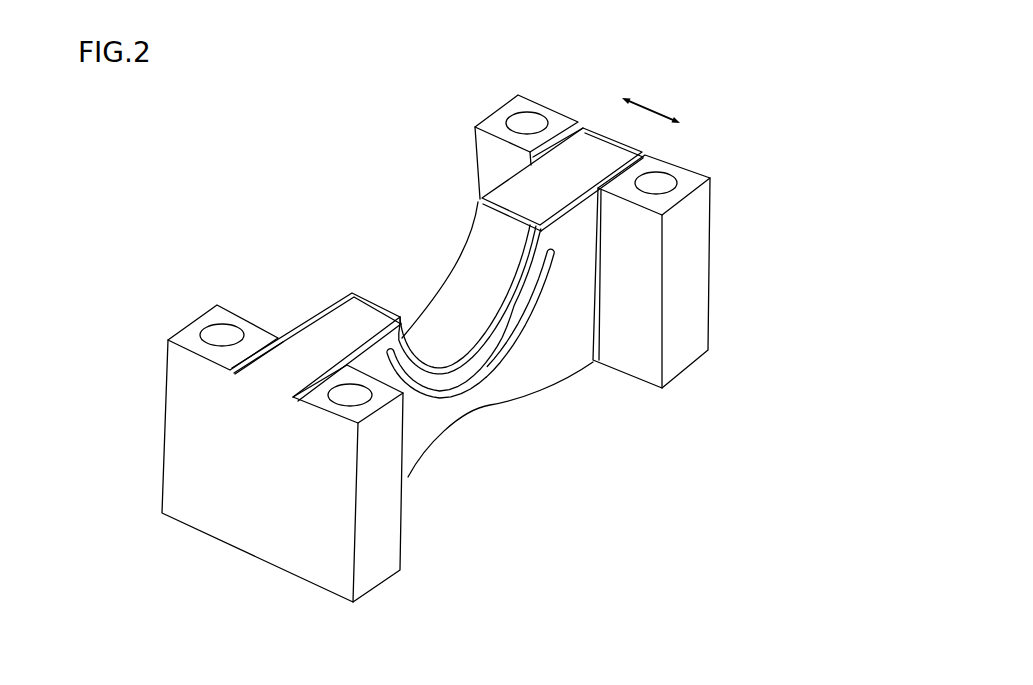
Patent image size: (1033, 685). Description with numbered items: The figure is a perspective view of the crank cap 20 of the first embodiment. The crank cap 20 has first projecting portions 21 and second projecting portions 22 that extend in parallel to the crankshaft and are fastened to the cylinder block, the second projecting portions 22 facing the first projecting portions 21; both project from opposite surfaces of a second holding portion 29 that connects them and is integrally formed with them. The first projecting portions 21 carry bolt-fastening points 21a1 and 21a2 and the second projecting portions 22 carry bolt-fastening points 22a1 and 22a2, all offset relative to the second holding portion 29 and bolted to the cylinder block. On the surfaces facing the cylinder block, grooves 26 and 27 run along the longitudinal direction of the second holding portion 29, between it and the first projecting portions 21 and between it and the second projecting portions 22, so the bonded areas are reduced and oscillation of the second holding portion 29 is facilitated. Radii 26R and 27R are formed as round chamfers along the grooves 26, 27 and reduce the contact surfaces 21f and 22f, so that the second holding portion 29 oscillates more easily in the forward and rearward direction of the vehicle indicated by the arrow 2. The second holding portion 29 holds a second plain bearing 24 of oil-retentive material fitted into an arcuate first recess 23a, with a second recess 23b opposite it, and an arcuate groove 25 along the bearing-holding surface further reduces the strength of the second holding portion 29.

The arrow 2 is at (656, 104).
The crank cap 20 is at (342, 154).
The first projecting portions 21 is at (692, 258).
The bolt-fastening point 21a1 is at (527, 119).
The bolt-fastening point 21a2 is at (663, 182).
The contact surface 21f is at (608, 143).
The second projecting portions 22 is at (192, 452).
The bolt-fastening point 22a1 is at (224, 331).
The bolt-fastening point 22a2 is at (368, 396).
The contact surface 22f is at (188, 340).
The first recess 23a is at (507, 353).
The second recess 23b is at (450, 378).
The second plain bearing 24 is at (448, 328).
The groove 25 is at (475, 383).
The groove 26 is at (584, 147).
The radius 26R is at (490, 193).
The groove 27 is at (278, 330).
The radius 27R is at (317, 312).
The second holding portion 29 is at (543, 362).